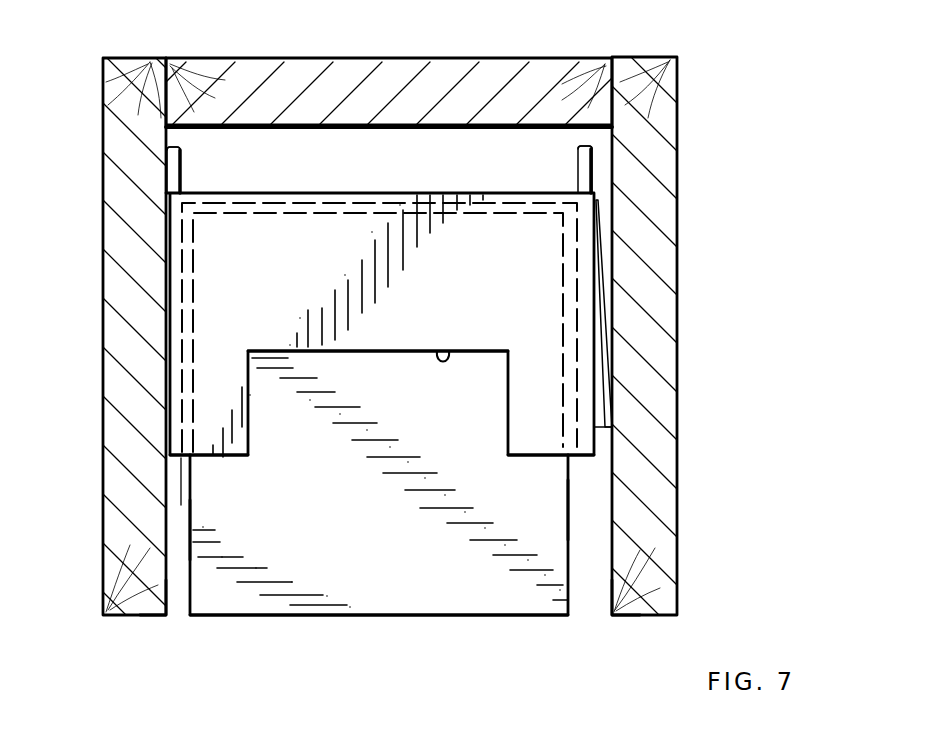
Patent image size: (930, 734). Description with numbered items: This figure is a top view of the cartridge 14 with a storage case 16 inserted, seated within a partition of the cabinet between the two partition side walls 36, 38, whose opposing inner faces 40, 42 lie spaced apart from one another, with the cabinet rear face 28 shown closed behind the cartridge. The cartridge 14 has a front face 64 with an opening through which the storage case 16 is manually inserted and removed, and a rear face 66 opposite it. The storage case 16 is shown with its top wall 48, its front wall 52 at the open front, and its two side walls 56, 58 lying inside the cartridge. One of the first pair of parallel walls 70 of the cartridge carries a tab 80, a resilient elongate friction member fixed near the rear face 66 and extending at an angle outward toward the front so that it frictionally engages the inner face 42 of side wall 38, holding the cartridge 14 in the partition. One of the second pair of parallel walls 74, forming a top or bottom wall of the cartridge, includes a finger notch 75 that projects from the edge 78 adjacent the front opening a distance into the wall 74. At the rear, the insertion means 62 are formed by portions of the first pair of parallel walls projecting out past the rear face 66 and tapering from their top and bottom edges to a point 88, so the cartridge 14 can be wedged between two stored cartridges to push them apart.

The cartridge 14 is at (316, 232).
The storage case 16 is at (412, 594).
The rear face 28 is at (466, 52).
The partition side wall 36 is at (113, 228).
The partition side wall 38 is at (645, 235).
The inner face 40 is at (180, 586).
The inner face 42 is at (610, 595).
The top wall 48 is at (315, 582).
The front wall 52 is at (468, 620).
The side wall 56 is at (195, 552).
The side wall 58 is at (578, 525).
The insertion means 62 is at (190, 176).
The front face 64 is at (181, 462).
The rear face 66 is at (379, 186).
The parallel wall 70 is at (597, 445).
The parallel wall 74 is at (381, 332).
The finger notch 75 is at (443, 350).
The edge 78 is at (228, 462).
The tab 80 is at (614, 352).
The point 88 is at (184, 148).